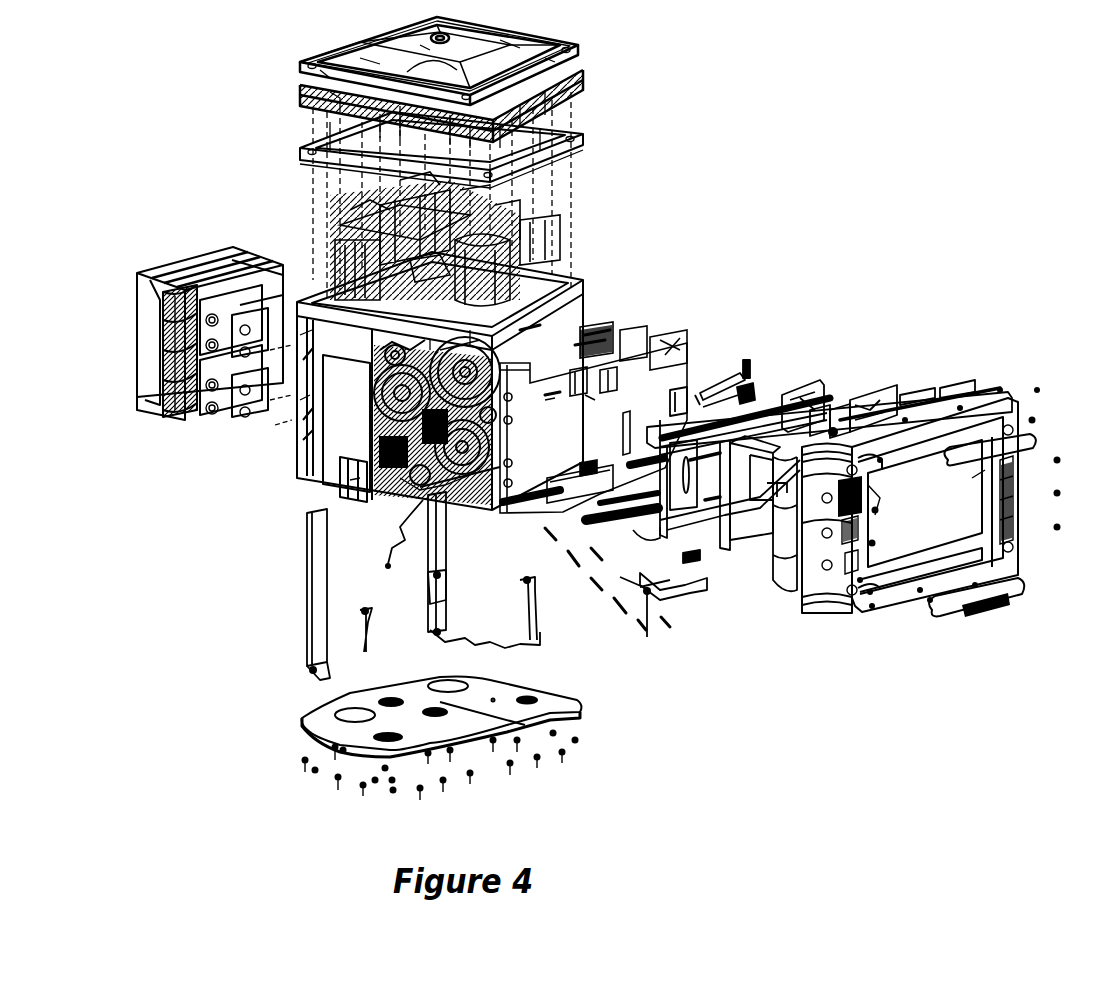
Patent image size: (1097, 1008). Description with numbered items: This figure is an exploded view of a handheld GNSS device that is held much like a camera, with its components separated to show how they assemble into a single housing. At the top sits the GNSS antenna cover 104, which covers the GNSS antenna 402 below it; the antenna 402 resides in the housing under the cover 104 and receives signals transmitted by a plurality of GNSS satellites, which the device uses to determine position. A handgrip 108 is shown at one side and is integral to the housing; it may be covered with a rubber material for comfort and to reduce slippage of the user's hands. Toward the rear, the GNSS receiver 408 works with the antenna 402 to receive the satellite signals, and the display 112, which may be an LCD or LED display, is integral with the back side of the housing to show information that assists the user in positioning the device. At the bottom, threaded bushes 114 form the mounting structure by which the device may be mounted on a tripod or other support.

The GNSS antenna cover 104 is at (577, 73).
The GNSS antenna 402 is at (560, 162).
The handgrip 108 is at (153, 398).
The GNSS receiver 408 is at (850, 430).
The display 112 is at (907, 517).
The threaded bushes 114 is at (580, 738).